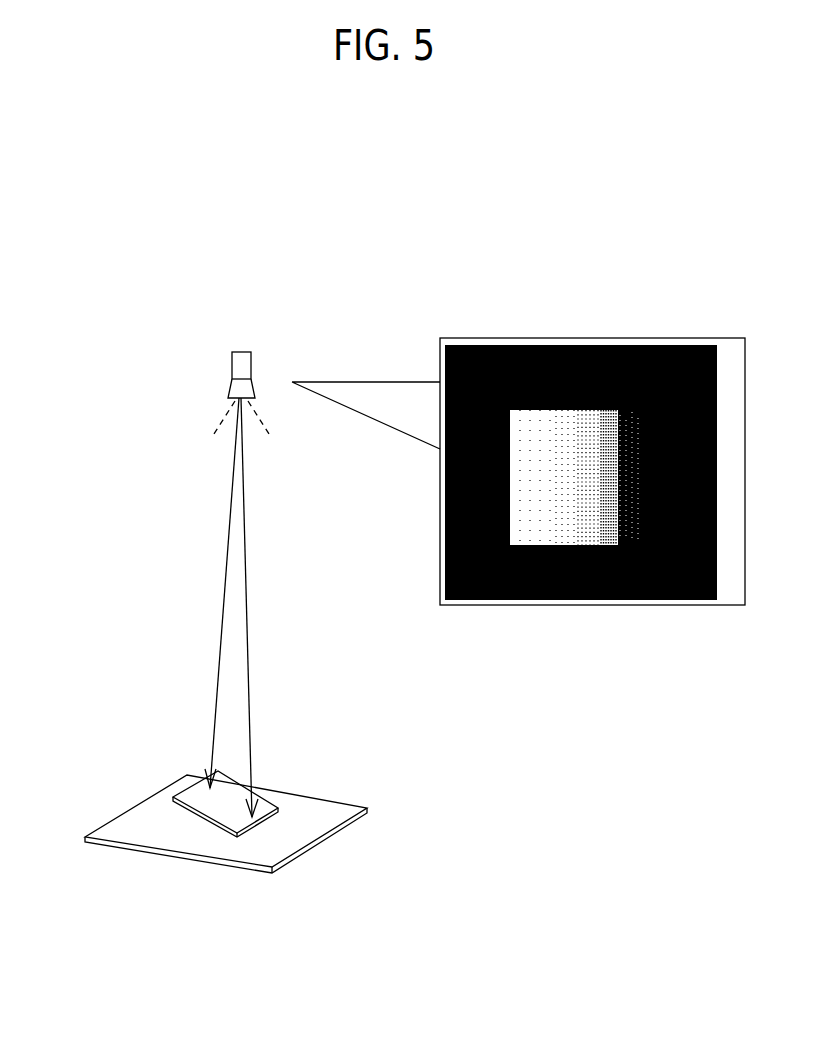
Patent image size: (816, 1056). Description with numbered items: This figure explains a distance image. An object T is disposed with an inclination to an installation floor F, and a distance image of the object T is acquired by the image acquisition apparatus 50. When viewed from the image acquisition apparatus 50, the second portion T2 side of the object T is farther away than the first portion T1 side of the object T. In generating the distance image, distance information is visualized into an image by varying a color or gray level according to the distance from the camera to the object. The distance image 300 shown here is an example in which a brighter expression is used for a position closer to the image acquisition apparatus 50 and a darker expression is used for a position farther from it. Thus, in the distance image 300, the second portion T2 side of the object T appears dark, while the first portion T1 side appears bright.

The image acquisition apparatus 50 is at (232, 356).
The distance image 300 is at (535, 338).
The object T is at (193, 795).
The installation floor F is at (115, 817).
The first portion T1 is at (530, 512).
The second portion T2 is at (631, 542).